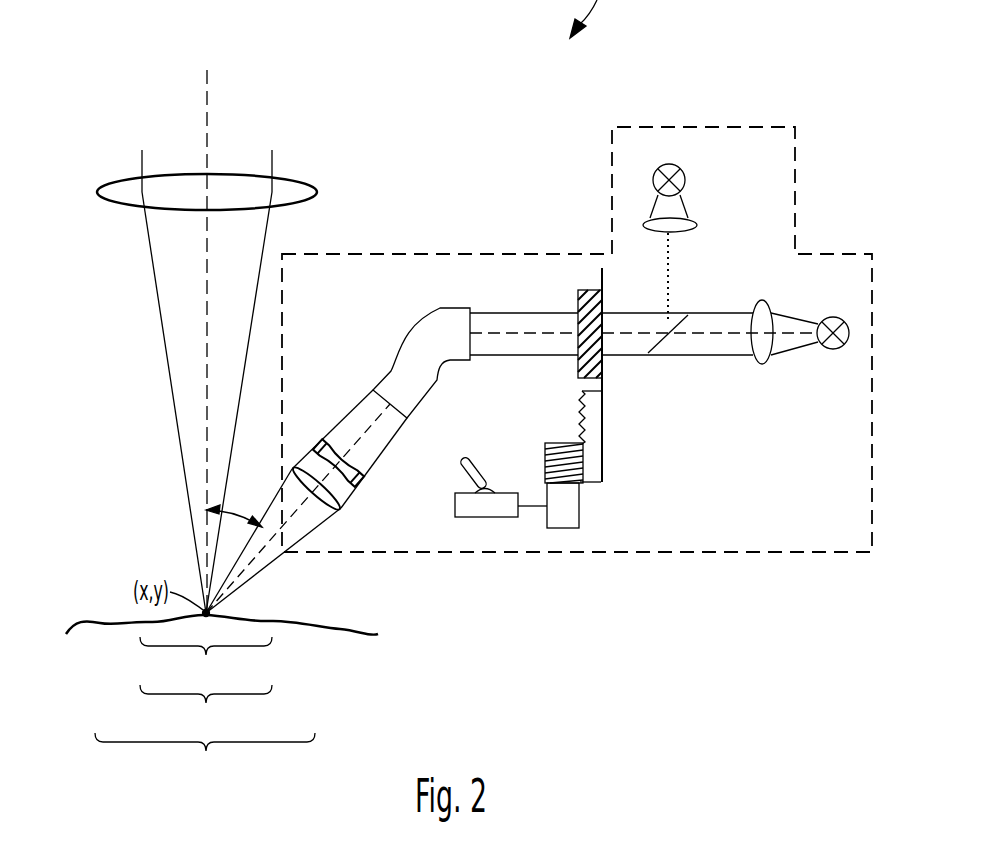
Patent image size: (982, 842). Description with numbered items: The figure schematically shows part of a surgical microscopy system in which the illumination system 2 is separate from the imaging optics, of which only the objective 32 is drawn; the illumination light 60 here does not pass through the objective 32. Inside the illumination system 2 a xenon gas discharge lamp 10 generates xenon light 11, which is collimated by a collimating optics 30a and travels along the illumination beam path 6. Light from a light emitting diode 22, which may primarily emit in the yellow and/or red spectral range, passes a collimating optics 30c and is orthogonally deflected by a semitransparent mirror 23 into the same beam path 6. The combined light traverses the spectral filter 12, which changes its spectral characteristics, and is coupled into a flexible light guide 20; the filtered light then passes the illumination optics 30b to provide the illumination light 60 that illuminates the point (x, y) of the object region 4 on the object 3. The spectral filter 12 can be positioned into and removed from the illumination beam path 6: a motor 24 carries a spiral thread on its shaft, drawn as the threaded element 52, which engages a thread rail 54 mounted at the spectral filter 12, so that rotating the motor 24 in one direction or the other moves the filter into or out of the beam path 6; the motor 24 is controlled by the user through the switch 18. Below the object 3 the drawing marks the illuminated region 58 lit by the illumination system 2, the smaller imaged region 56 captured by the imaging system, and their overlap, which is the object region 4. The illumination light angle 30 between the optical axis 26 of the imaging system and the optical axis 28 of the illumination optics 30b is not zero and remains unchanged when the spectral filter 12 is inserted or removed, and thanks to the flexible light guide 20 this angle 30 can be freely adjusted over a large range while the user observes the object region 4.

The illumination system 2 is at (735, 553).
The object 3 is at (333, 637).
The object region 4 is at (206, 662).
The illumination beam path 6 is at (498, 335).
The xenon gas discharge lamp 10 is at (833, 350).
The xenon light 11 is at (792, 343).
The spectral filter 12 is at (578, 293).
The switch 18 is at (493, 518).
The flexible light guide 20 is at (432, 333).
The light emitting diode 22 is at (686, 180).
The semitransparent mirror 23 is at (660, 345).
The motor 24 is at (582, 515).
The optical axis of the imaging system 26 is at (207, 100).
The optical axis of the illumination optics 28 is at (270, 552).
The illumination light angle 30 is at (227, 548).
The collimating optics 30a is at (760, 363).
The illumination optics 30b is at (304, 526).
The collimating optics 30c is at (698, 226).
The objective 32 is at (118, 178).
The threaded connector 52 is at (545, 457).
The thread rail 54 is at (580, 413).
The imaged region 56 is at (206, 710).
The illuminated region 58 is at (205, 759).
The illumination light 60 is at (282, 525).